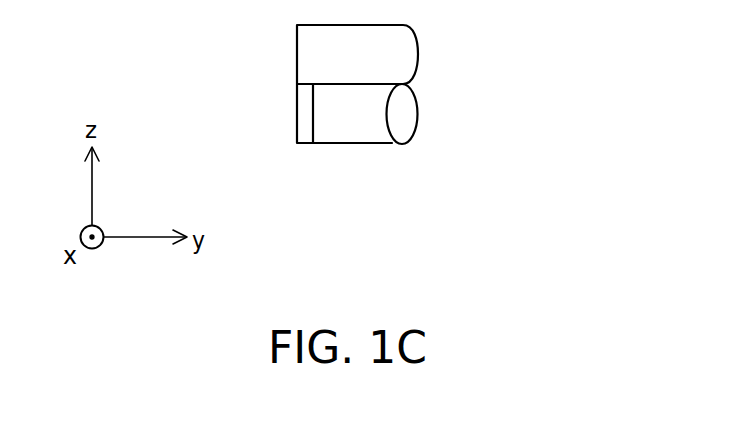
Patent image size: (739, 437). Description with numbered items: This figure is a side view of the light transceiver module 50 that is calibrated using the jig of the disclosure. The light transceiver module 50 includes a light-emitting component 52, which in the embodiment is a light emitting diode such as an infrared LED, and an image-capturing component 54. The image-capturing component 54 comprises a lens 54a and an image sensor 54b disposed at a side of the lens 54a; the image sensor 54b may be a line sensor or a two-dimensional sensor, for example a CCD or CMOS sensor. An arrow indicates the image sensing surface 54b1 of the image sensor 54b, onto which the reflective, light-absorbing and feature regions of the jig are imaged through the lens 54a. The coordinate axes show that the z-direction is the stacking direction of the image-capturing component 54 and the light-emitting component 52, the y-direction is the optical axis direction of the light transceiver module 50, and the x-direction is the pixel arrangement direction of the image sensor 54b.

The light transceiver module 50 is at (543, 243).
The light-emitting component 52 is at (320, 58).
The image-capturing component 54 is at (398, 166).
The lens 54a is at (402, 127).
The image sensor 54b is at (306, 130).
The image sensing surface 54b1 is at (313, 120).